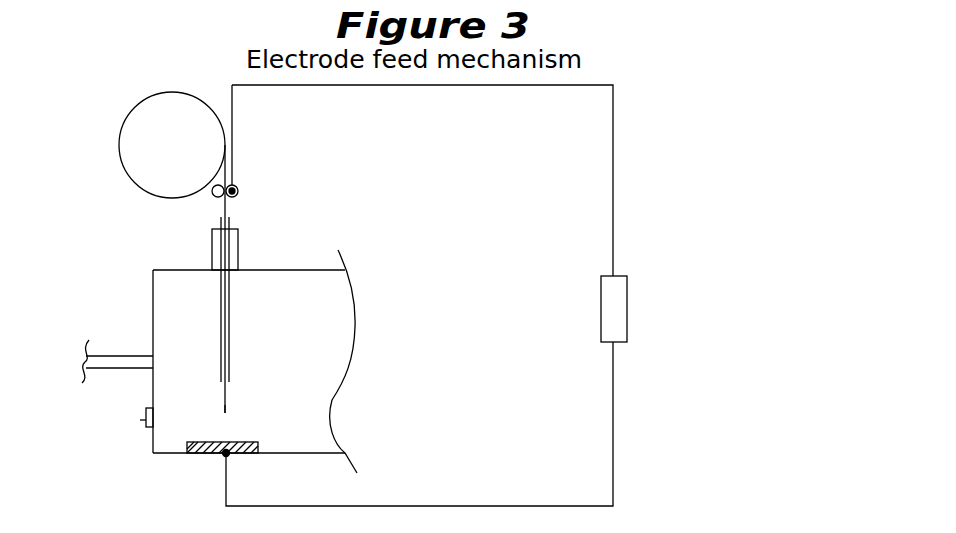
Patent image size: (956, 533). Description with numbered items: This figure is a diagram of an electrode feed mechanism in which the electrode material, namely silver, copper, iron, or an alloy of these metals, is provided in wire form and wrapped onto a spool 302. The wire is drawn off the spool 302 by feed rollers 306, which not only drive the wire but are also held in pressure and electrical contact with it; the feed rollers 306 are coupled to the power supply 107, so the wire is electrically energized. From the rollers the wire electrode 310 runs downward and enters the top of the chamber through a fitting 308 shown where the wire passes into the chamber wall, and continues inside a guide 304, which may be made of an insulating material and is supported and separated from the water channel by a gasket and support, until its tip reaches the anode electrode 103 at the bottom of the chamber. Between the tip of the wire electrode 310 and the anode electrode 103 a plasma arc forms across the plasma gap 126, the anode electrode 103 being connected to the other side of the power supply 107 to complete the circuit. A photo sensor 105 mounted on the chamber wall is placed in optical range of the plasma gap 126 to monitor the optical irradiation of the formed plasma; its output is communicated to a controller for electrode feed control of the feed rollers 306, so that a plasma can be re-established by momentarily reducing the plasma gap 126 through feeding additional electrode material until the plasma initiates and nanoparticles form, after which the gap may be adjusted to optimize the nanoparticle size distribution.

The spool 302 is at (120, 132).
The feed rollers 306 is at (237, 196).
The electrode guide 308 is at (212, 252).
The electrode wire 310 is at (227, 322).
The guide 304 is at (232, 348).
The plasma arc 126 is at (226, 427).
The anode electrode 103 is at (251, 442).
The photo sensor 105 is at (148, 427).
The power supply 107 is at (700, 309).